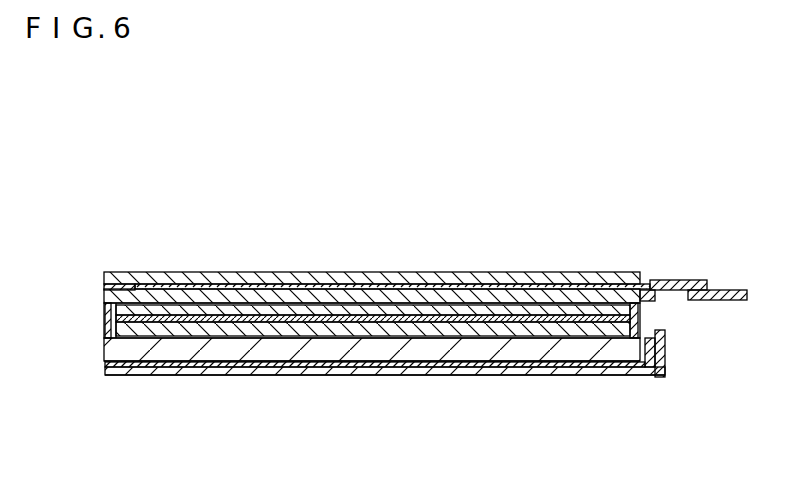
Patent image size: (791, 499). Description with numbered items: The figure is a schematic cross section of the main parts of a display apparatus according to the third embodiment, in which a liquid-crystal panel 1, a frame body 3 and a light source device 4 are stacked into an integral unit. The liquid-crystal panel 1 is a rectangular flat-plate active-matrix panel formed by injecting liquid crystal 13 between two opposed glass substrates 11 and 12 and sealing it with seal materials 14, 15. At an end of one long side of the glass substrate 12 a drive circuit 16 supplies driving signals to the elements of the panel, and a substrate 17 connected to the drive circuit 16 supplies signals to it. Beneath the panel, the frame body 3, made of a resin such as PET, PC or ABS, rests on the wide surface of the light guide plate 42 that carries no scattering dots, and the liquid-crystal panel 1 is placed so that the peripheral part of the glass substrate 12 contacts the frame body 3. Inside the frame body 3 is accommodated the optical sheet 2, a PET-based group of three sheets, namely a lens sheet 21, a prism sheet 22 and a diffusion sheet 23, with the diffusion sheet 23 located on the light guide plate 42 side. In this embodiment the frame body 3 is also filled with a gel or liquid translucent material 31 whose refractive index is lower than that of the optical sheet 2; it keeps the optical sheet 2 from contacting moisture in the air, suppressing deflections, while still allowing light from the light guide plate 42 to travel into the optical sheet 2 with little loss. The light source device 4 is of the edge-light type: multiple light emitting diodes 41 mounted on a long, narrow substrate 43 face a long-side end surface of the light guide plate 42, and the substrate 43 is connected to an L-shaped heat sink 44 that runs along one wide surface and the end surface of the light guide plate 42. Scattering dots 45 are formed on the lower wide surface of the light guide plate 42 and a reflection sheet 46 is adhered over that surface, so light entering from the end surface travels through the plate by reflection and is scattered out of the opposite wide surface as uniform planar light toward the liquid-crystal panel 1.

The liquid-crystal panel 1 is at (127, 262).
The glass substrate 11 is at (104, 270).
The glass substrate 12 is at (104, 296).
The liquid crystal 13 is at (211, 272).
The seal material 14 is at (647, 280).
The seal material 15 is at (104, 287).
The drive circuit 16 is at (688, 280).
The substrate 17 is at (730, 290).
The optical sheet 2 is at (392, 197).
The lens sheet 21 is at (277, 312).
The prism sheet 22 is at (314, 320).
The diffusion sheet 23 is at (364, 330).
The frame body 3 is at (103, 330).
The translucent material 31 is at (103, 313).
The light source device 4 is at (97, 379).
The light emitting diode 41 is at (648, 377).
The light guide plate 42 is at (292, 365).
The substrate 43 is at (652, 368).
The heat sink 44 is at (665, 360).
The scattering dots 45 is at (176, 372).
The reflection sheet 46 is at (387, 374).